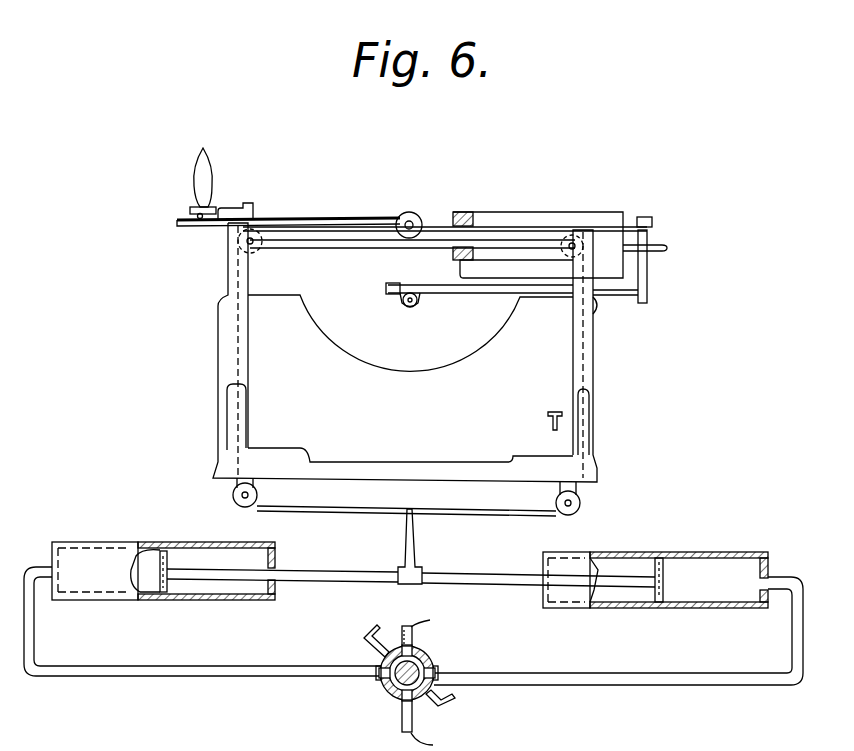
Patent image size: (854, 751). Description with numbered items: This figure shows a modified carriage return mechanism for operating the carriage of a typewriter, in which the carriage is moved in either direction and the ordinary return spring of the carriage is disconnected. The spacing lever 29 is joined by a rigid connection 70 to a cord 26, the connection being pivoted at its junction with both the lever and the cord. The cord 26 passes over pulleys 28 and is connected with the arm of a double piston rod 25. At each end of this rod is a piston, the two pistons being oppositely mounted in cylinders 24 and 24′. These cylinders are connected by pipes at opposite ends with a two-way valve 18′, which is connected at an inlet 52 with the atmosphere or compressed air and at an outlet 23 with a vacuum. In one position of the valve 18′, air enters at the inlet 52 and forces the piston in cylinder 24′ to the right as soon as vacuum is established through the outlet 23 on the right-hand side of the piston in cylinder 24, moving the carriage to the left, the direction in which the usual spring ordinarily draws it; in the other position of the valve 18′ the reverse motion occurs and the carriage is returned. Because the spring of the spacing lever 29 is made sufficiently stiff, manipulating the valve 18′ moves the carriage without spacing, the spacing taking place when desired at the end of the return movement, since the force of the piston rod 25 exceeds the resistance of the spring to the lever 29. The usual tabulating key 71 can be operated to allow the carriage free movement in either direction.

The rigid connection 70 is at (292, 219).
The cord 26 is at (443, 227).
The pulleys 28 is at (251, 251).
The spacing lever 29 is at (195, 182).
The tabulating key 71 is at (560, 416).
The cylinder 24′ is at (90, 545).
The cylinder 24 is at (673, 552).
The double piston rod 25 is at (412, 543).
The two-way valve 18′ is at (428, 661).
The outlet 23 is at (400, 633).
The inlet 52 is at (402, 713).